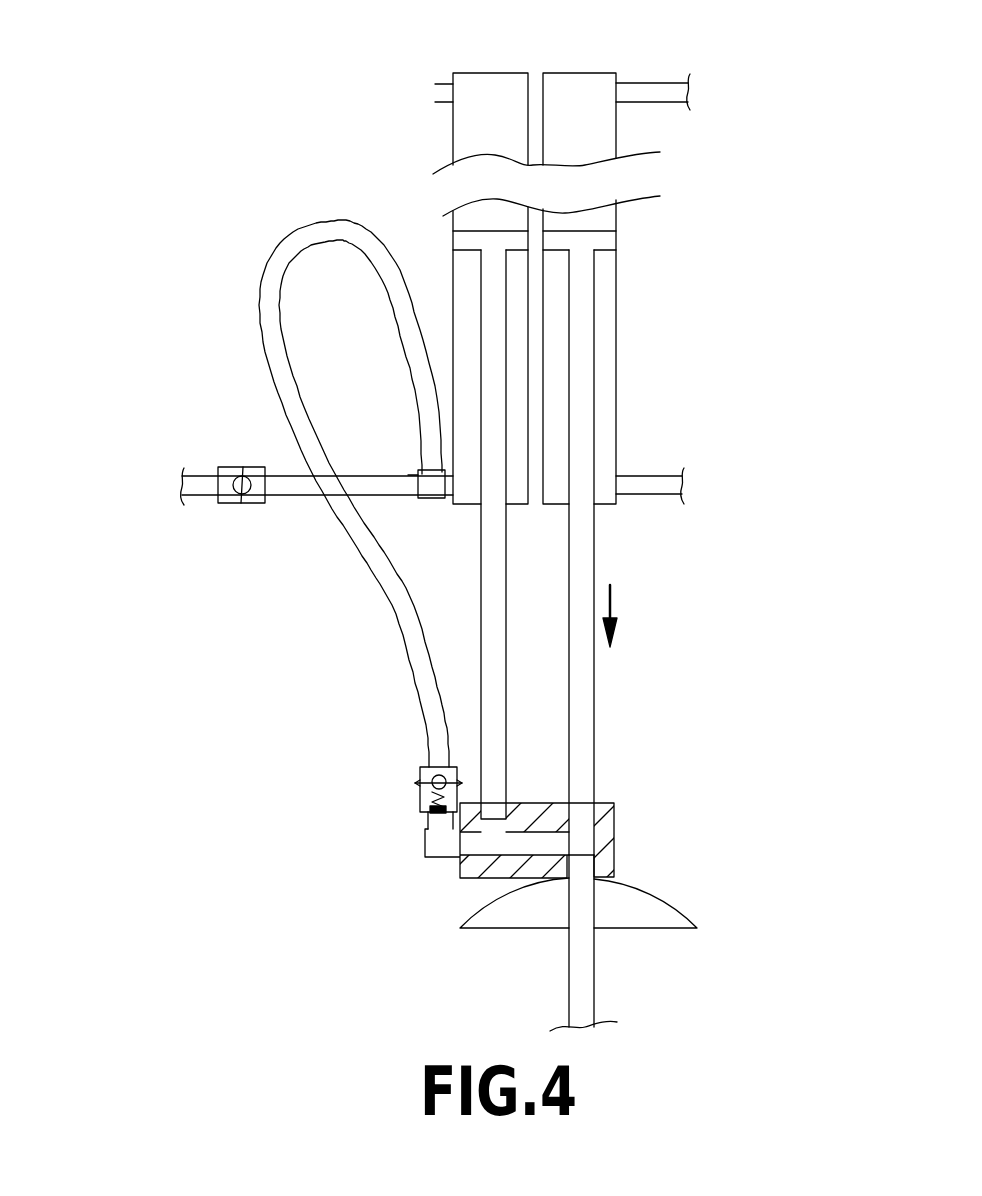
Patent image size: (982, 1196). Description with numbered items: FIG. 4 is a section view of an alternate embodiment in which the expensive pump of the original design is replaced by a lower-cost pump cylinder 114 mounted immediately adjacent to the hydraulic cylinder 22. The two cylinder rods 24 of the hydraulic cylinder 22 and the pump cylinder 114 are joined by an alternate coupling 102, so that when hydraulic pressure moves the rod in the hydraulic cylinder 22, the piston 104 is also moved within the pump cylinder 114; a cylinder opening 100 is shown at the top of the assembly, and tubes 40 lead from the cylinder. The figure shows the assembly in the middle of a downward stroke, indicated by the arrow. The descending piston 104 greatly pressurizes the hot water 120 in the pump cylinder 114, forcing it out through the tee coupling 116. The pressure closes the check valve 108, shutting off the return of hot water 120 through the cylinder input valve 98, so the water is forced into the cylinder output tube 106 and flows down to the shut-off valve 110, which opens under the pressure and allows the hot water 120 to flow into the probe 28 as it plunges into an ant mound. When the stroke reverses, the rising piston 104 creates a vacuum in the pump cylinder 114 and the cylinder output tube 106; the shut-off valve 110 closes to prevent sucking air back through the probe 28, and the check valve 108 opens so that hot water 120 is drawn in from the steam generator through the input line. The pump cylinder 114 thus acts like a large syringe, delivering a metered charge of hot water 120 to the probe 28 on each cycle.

The hydraulic cylinder 22 is at (607, 130).
The cylinder rods 24 is at (748, 698).
The probe 28 is at (587, 965).
The tubes 40 is at (655, 80).
The cylinder input valve 98 is at (212, 475).
The cylinder opening 100 is at (299, 52).
The alternate coupling 102 is at (615, 820).
The piston 104 is at (229, 170).
The cylinder output tube 106 is at (227, 623).
The check valve 108 is at (142, 593).
The shut-off valve 110 is at (422, 790).
The pump cylinder 114 is at (467, 147).
The tee coupling 116 is at (422, 466).
The hot water 120 is at (199, 215).